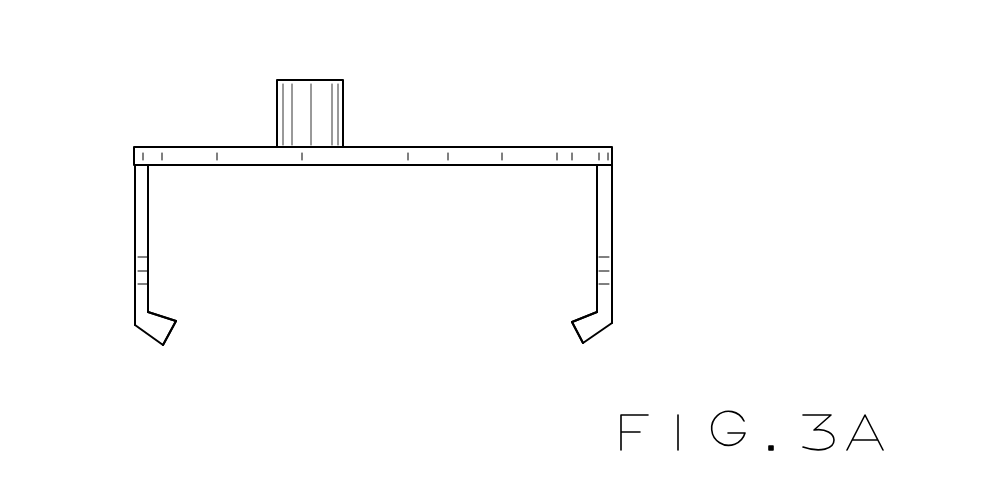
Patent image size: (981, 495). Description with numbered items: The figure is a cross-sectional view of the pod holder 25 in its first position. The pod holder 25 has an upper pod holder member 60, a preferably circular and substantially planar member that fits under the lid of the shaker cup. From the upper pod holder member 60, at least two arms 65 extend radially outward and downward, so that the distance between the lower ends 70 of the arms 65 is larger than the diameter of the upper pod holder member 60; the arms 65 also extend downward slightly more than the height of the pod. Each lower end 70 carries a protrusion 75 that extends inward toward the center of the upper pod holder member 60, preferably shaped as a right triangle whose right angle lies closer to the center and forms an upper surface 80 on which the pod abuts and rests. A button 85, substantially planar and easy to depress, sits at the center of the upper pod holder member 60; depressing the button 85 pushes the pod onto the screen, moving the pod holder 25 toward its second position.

The pod holder 25 is at (182, 98).
The upper pod holder member 60 is at (517, 147).
The arms 65 is at (130, 264).
The lower ends 70 is at (135, 311).
The protrusion 75 is at (171, 332).
The upper surface 80 is at (162, 315).
The button 85 is at (322, 80).